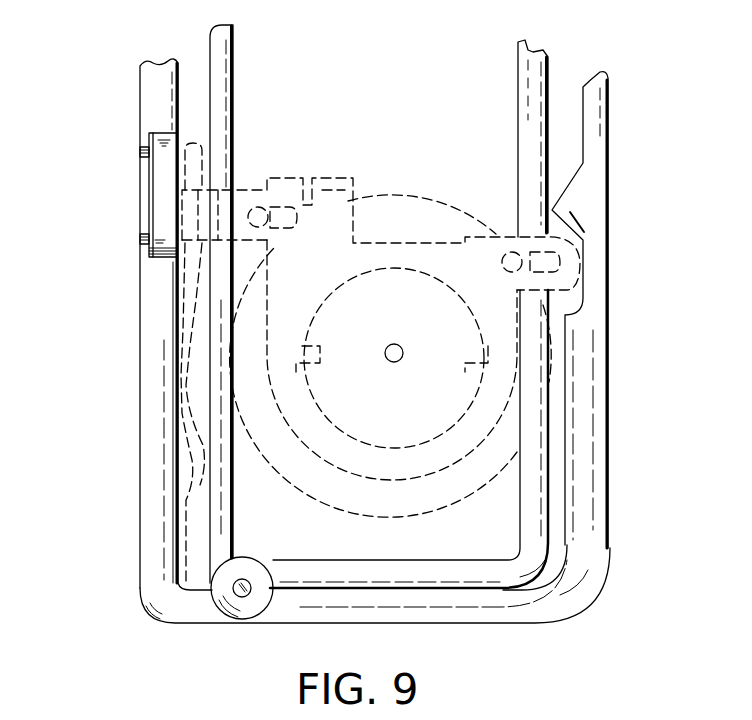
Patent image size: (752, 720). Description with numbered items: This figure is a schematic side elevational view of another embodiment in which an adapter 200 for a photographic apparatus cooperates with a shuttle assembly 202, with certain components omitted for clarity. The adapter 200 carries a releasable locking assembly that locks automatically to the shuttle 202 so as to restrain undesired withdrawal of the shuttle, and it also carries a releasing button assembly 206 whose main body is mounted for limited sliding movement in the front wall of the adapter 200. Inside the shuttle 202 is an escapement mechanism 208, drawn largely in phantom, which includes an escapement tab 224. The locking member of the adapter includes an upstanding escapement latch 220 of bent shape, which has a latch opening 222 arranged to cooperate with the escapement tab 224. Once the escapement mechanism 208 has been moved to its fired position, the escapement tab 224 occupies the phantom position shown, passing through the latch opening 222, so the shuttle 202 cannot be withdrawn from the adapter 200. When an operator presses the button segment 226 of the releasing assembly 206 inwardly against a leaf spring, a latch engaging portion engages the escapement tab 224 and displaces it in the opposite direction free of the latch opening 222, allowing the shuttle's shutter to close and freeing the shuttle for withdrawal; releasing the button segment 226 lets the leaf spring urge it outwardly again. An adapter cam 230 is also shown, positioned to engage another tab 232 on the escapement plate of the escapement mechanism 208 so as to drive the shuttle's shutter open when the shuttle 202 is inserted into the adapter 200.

The adapter 200 is at (140, 67).
The shuttle assembly 202 is at (226, 63).
The releasing button assembly 206 is at (103, 120).
The escapement mechanism 208 is at (276, 495).
The escapement latch 220 is at (190, 306).
The latch opening 222 is at (195, 252).
The escapement tab 224 is at (232, 206).
The button segment 226 is at (138, 194).
The adapter cam 230 is at (583, 183).
The tab 232 is at (607, 286).